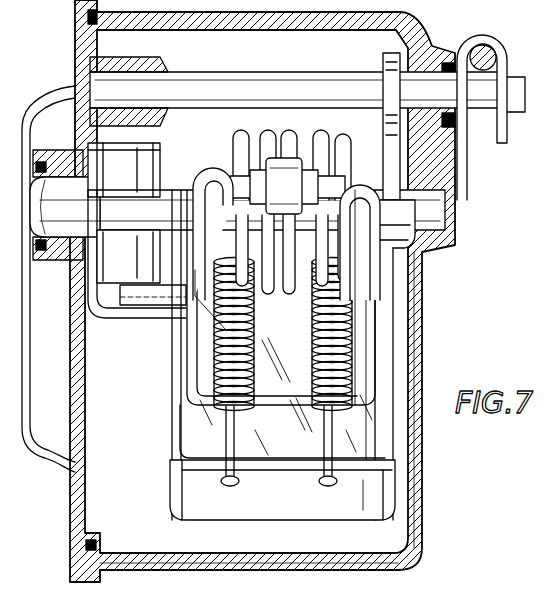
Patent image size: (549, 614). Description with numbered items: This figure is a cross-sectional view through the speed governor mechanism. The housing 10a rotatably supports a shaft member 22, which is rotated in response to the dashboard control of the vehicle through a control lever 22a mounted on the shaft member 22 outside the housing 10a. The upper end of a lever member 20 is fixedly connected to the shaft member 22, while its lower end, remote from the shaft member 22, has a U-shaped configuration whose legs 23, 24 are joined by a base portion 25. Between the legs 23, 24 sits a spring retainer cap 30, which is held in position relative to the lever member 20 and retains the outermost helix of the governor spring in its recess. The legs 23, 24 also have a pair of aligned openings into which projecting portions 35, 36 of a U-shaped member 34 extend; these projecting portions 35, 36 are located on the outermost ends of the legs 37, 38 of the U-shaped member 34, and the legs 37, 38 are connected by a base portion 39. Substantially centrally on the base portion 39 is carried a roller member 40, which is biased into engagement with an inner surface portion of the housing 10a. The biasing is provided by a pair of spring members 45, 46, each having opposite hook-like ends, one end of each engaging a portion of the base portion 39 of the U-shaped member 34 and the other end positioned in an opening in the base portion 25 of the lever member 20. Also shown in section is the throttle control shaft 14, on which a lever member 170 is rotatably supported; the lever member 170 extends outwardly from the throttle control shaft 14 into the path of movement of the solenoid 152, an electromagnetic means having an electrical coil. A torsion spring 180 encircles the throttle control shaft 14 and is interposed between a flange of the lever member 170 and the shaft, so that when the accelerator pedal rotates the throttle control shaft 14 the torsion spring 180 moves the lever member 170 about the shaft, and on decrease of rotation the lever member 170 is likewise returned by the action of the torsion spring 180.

The housing 10a is at (400, 30).
The throttle control shaft 14 is at (155, 200).
The lever member 20 is at (392, 300).
The shaft member 22 is at (278, 82).
The control lever 22a is at (462, 155).
The leg 23 is at (172, 360).
The leg 24 is at (385, 372).
The base portion 25 is at (220, 500).
The spring retainer cap 30 is at (290, 345).
The U-shaped member 34 is at (375, 253).
The projecting portion 35 is at (165, 402).
The projecting portion 36 is at (392, 405).
The leg 37 is at (186, 296).
The leg 38 is at (368, 321).
The base portion 39 is at (230, 180).
The roller member 40 is at (400, 188).
The spring member 45 is at (226, 332).
The spring member 46 is at (355, 340).
The solenoid 152 is at (90, 148).
The lever member 170 is at (90, 284).
The torsion spring 180 is at (245, 138).